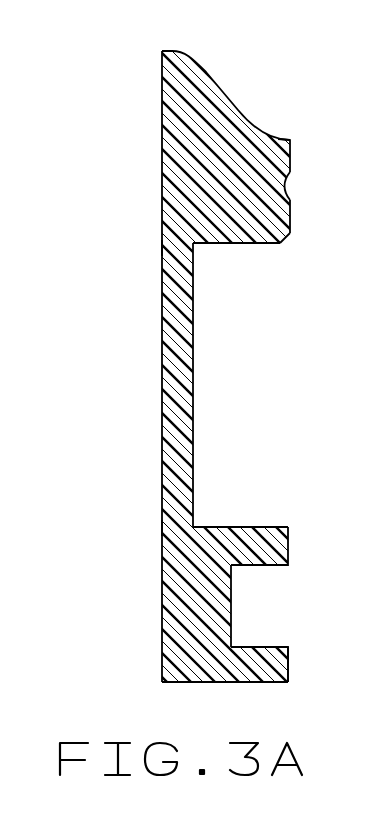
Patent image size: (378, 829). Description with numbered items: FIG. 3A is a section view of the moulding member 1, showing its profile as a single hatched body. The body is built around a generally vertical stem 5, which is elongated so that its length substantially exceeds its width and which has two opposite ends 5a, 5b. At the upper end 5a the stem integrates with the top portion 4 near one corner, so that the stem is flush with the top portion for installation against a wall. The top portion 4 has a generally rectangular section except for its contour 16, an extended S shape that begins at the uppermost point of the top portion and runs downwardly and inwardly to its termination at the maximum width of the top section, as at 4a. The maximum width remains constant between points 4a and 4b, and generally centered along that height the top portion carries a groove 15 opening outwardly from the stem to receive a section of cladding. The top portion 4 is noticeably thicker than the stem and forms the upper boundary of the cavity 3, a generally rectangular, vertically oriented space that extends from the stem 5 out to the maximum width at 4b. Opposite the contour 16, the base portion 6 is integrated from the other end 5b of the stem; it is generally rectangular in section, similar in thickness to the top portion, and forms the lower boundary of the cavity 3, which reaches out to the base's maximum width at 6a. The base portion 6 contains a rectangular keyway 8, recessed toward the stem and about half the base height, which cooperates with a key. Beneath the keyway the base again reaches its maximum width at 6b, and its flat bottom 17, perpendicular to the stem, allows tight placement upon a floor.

The profile strip 1 is at (242, 75).
The cavity 3 is at (230, 338).
The top portion 4 is at (207, 193).
The termination of contour at maximum width of top section 4a is at (292, 140).
The maximum width of top section at cavity 4b is at (292, 235).
The stem 5 is at (170, 376).
The end of stem 5a is at (162, 247).
The other end of stem 5b is at (162, 529).
The base portion 6 is at (197, 598).
The maximum width of base portion 6a is at (288, 558).
The maximum width of base portion beneath keyway 6b is at (288, 667).
The keyway 8 is at (253, 602).
The groove 15 is at (285, 186).
The contour 16 is at (198, 100).
The flat bottom 17 is at (228, 686).